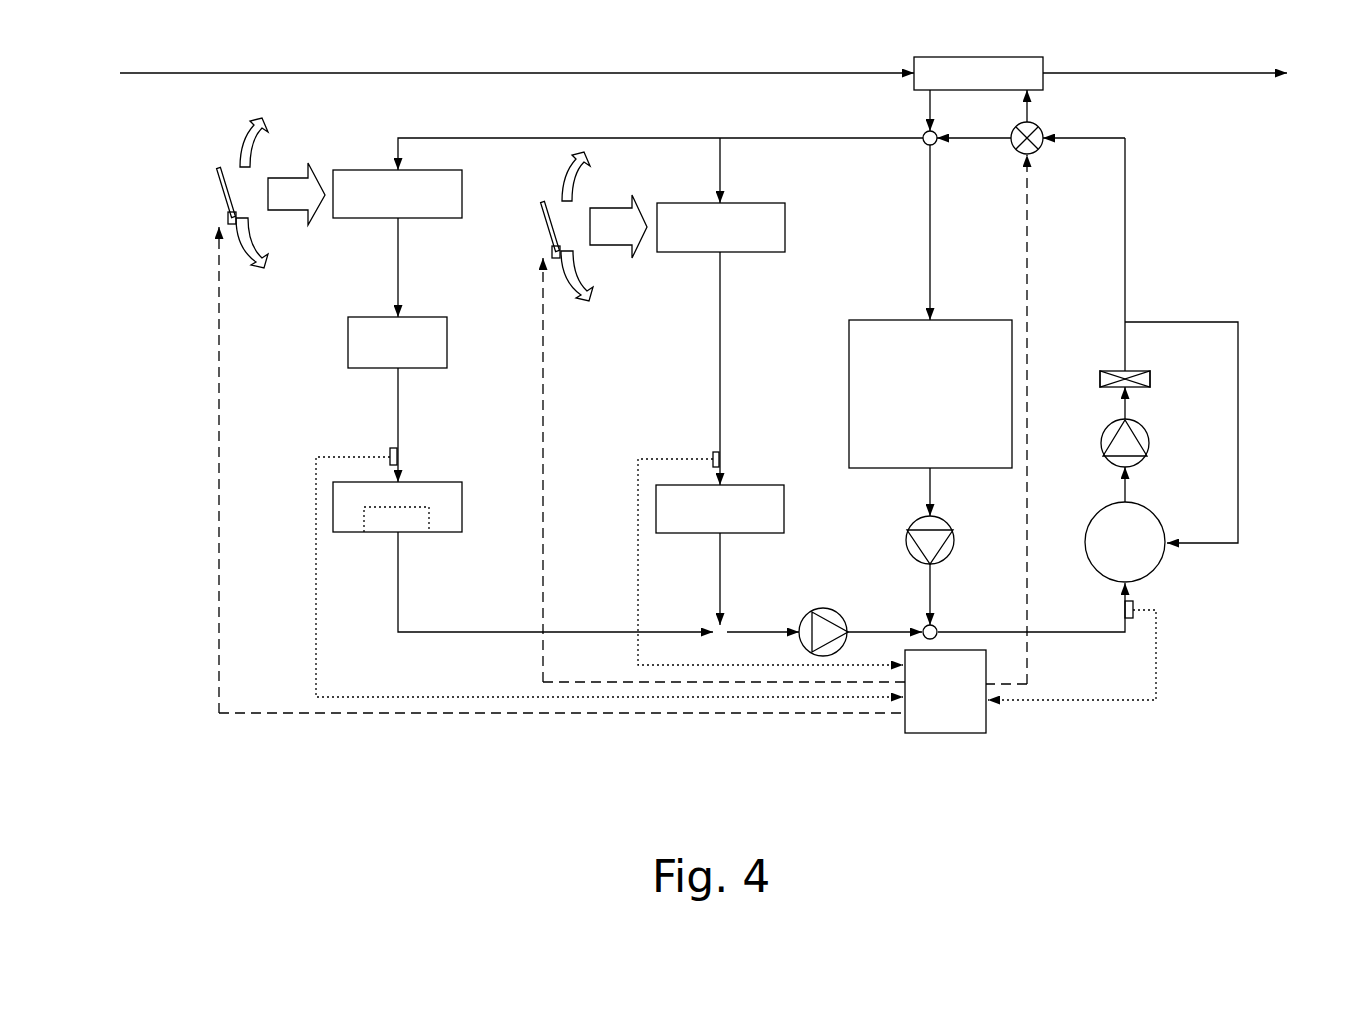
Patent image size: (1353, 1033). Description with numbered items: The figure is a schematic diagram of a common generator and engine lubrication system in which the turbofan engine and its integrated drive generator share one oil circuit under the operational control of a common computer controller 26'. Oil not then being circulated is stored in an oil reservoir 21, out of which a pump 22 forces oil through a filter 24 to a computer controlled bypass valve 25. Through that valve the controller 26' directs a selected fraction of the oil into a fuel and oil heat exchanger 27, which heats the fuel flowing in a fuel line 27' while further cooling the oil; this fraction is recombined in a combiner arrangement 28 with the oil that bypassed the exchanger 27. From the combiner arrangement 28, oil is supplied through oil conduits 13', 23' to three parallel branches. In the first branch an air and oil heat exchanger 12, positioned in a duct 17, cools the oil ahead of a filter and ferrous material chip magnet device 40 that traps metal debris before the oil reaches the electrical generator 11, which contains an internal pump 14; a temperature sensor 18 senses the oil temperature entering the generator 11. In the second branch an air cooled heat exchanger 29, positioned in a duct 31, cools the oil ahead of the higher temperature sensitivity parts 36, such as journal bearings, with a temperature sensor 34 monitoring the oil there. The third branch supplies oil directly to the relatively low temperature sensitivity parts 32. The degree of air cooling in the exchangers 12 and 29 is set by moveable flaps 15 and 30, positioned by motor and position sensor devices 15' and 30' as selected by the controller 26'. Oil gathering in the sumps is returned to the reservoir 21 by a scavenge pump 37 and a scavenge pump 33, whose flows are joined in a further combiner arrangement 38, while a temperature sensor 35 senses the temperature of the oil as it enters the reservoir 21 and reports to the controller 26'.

The electrical generator 11 is at (430, 482).
The air and oil heat exchanger 12 is at (432, 218).
The oil conduits 13' is at (703, 352).
The oil conduits 23' is at (703, 352).
The pump 14 is at (380, 532).
The moveable flap 15 is at (199, 192).
The motor and associated position sensor device 15' is at (537, 460).
The duct 17 is at (262, 128).
The temperature sensor 18 is at (390, 450).
The oil reservoir 21 is at (1158, 570).
The pump 22 is at (1147, 462).
The filter 24 is at (1150, 371).
The bypass valve 25 is at (1038, 127).
The common computer controller 26' is at (976, 691).
The fuel and oil heat exchanger 27 is at (943, 77).
The fuel line 27' is at (968, 60).
The combiner arrangement 28 is at (923, 135).
The air cooled heat exchanger 29 is at (785, 215).
The moveable flap 30 is at (529, 226).
The motor and associated position sensor device 30' is at (702, 464).
The duct 31 is at (584, 162).
The relatively low temperature sensitivity parts 32 is at (849, 418).
The scavenge pump 33 is at (953, 538).
The temperature sensor 34 is at (713, 455).
The temperature sensor 35 is at (1128, 618).
The higher temperature sensitivity parts 36 is at (770, 485).
The scavenge pump 37 is at (823, 608).
The combiner arrangement 38 is at (937, 628).
The filter and ferrous material chip magnet device 40 is at (348, 325).